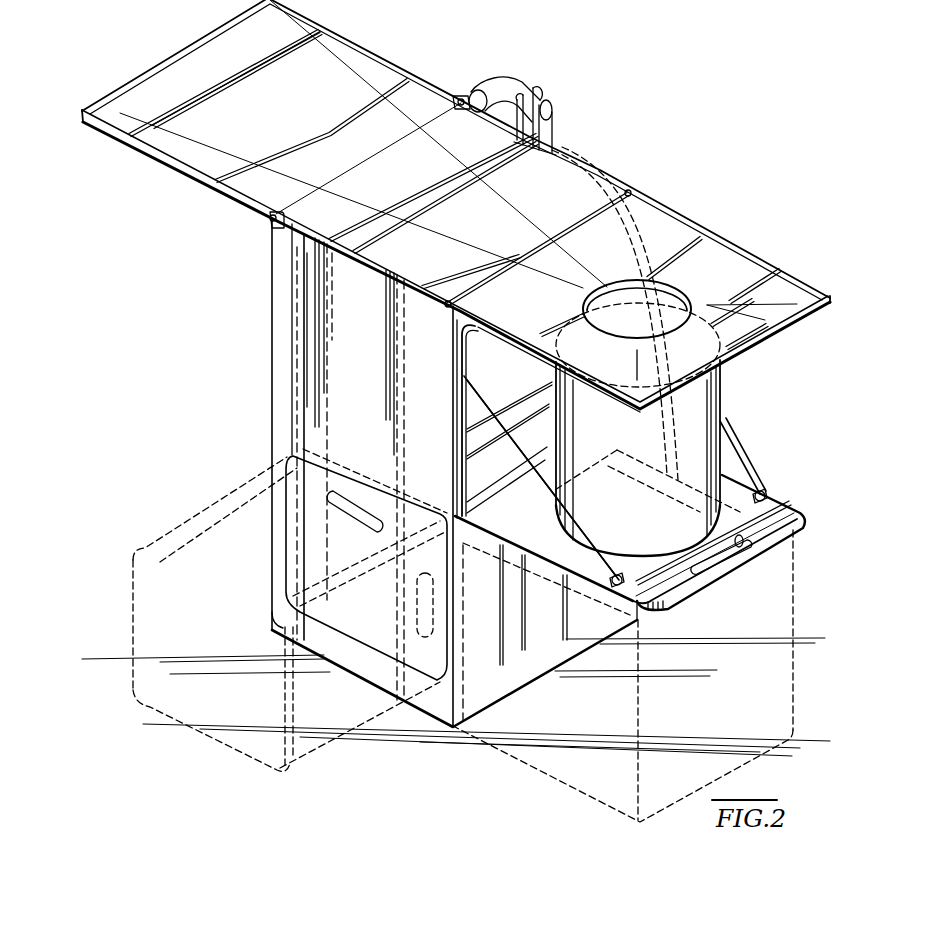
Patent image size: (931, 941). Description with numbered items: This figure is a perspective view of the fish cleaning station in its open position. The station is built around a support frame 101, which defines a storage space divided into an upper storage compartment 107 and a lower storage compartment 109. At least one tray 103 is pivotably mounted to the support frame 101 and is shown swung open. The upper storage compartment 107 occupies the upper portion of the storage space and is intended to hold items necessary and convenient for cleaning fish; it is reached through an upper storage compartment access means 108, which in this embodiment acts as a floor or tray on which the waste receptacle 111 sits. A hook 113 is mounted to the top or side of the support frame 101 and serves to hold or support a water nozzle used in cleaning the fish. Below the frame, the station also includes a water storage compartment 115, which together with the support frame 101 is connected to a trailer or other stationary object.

The support frame 101 is at (307, 348).
The tray 103 is at (281, 105).
The upper storage compartment 107 is at (487, 460).
The upper storage compartment access means 108 is at (800, 517).
The lower storage compartment 109 is at (237, 538).
The waste receptacle 111 is at (716, 435).
The hook 113 is at (558, 134).
The water storage compartment 115 is at (585, 713).